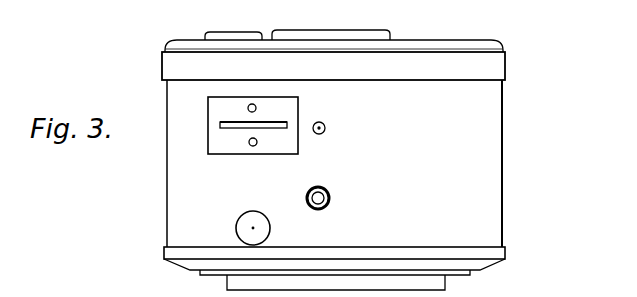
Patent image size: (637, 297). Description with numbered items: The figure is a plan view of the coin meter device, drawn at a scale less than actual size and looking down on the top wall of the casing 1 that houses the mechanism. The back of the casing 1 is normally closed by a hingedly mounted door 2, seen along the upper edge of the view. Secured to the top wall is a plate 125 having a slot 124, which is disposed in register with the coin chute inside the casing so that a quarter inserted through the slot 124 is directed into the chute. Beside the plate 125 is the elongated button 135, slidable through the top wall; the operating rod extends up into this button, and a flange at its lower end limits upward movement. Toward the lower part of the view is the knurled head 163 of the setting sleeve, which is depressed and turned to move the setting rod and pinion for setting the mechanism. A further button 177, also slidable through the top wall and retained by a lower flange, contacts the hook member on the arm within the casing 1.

The casing 1 is at (503, 172).
The door 2 is at (425, 62).
The slot 124 is at (228, 125).
The plate 125 is at (287, 106).
The elongated button 135 is at (326, 128).
The knurled head 163 is at (247, 221).
The button 177 is at (330, 199).